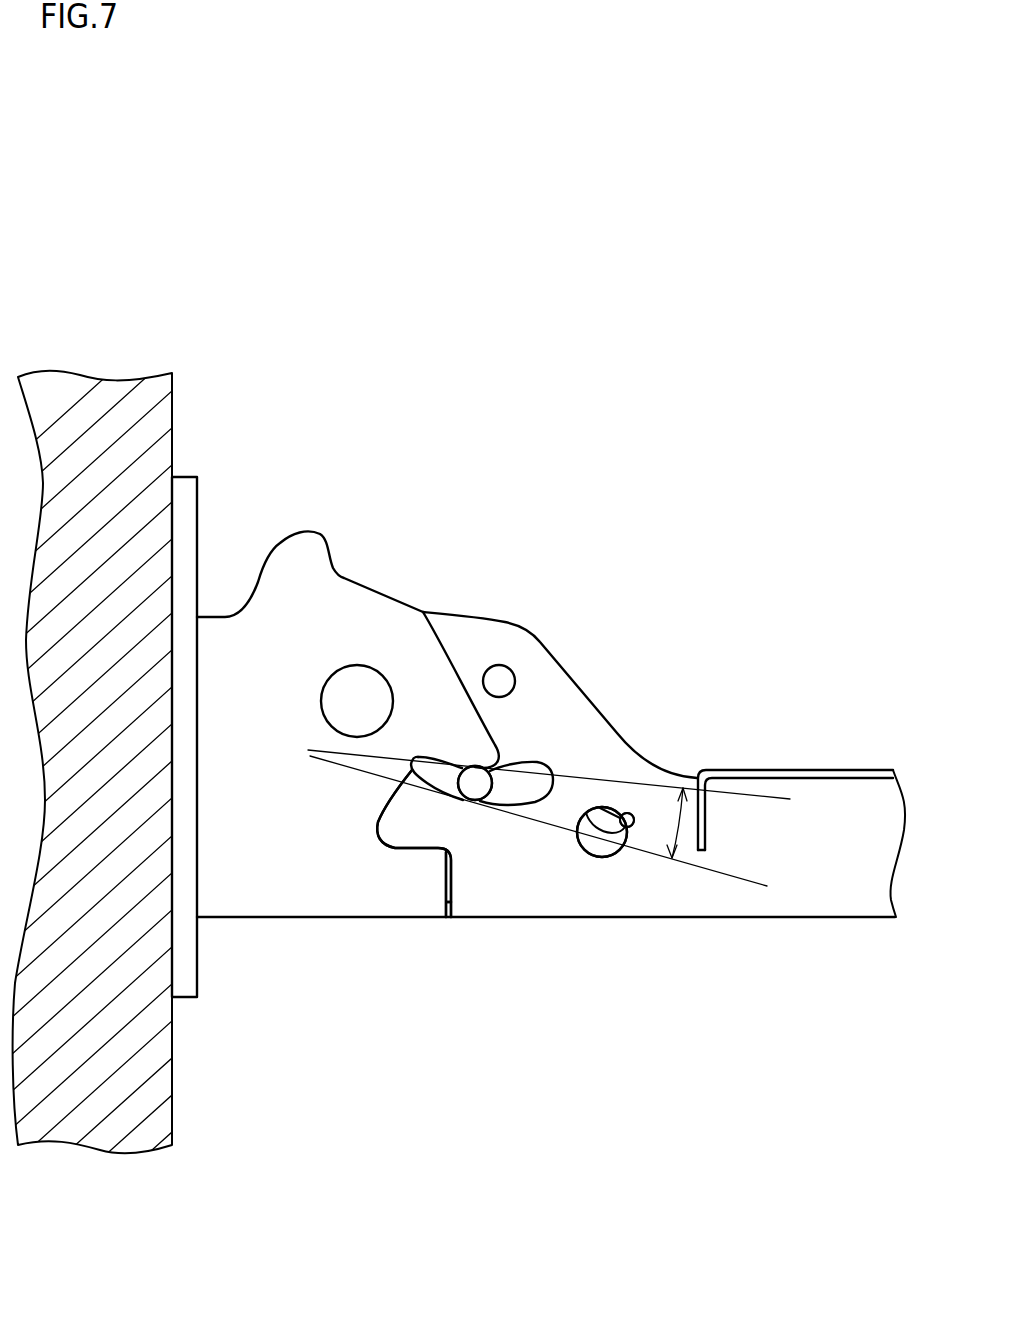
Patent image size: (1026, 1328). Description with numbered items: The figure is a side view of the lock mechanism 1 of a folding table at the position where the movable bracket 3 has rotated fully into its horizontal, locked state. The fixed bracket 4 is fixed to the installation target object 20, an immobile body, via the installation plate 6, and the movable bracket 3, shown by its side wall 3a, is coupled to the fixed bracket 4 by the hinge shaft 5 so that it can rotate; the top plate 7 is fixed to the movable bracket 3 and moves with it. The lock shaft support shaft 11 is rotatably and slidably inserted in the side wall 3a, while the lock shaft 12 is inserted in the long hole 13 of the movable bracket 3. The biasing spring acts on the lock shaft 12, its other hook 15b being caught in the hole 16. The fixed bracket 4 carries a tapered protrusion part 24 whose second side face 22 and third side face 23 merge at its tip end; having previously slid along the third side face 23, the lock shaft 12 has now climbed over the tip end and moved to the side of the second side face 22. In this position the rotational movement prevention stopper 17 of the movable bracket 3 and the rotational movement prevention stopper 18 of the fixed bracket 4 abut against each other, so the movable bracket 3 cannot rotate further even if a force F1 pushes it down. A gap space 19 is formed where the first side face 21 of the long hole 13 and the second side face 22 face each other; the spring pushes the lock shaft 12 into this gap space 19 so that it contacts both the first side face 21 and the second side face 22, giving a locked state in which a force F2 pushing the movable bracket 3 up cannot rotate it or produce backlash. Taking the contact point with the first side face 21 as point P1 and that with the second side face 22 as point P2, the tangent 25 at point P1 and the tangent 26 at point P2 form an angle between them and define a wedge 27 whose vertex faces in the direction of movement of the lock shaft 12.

The lock mechanism 1 is at (398, 448).
The movable bracket 3 is at (563, 723).
The side wall 3a is at (738, 890).
The fixed bracket 4 is at (267, 862).
The hinge shaft 5 is at (335, 668).
The installation plate 6 is at (197, 960).
The top plate 7 is at (782, 768).
The lock shaft support shaft 11 is at (510, 670).
The lock shaft 12 is at (522, 806).
The long hole 13 is at (582, 850).
The hook 15b is at (640, 826).
The hole 16 is at (631, 827).
The rotational movement prevention stopper 17 is at (445, 860).
The rotational movement prevention stopper 18 is at (445, 860).
The gap space 19 is at (448, 781).
The installation target object 20 is at (98, 1127).
The first side face 21 is at (543, 780).
The second side face 22 is at (410, 766).
The third side face 23 is at (452, 680).
The protrusion part 24 is at (493, 753).
The tangent 25 is at (687, 867).
The tangent 26 is at (645, 780).
The wedge 27 is at (603, 757).
The point P1 is at (477, 806).
The point P2 is at (475, 766).
The force F1 is at (842, 768).
The force F2 is at (842, 917).